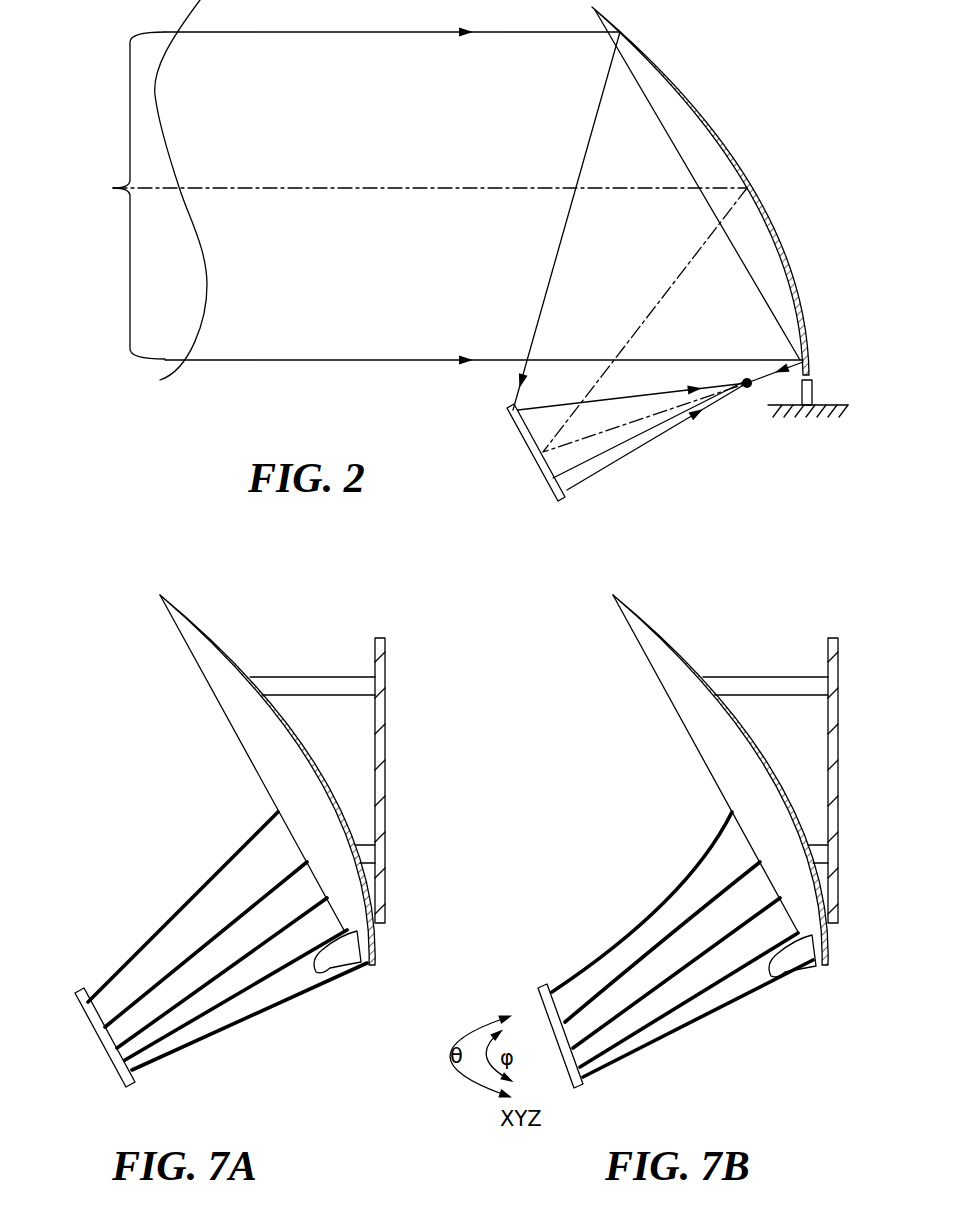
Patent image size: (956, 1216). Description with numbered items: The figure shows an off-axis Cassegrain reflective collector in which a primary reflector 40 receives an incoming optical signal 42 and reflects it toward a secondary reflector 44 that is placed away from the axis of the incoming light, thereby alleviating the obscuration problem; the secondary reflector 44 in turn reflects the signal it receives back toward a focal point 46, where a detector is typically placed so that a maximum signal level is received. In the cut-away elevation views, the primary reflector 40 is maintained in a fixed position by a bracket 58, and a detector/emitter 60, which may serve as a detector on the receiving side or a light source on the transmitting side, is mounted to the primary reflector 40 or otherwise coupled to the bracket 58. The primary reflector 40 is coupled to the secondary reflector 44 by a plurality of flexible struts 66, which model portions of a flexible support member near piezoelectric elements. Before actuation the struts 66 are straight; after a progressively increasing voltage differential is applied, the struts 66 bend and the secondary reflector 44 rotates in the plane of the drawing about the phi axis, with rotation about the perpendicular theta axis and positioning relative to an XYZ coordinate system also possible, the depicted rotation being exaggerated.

In FIG. 2, the primary reflector 40 is at (687, 97).
In FIG. 7A, the primary reflector 40 is at (205, 637).
In FIG. 7B, the primary reflector 40 is at (667, 643).
In FIG. 2, the incoming optical signal 42 is at (415, 195).
In FIG. 2, the secondary reflector 44 is at (557, 477).
In FIG. 7A, the secondary reflector 44 is at (75, 1005).
In FIG. 7B, the secondary reflector 44 is at (540, 1002).
In FIG. 2, the focal point 46 is at (752, 388).
In FIG. 7A, the bracket 58 is at (386, 750).
In FIG. 7B, the bracket 58 is at (839, 745).
In FIG. 7A, the detector/emitter 60 is at (327, 968).
In FIG. 7B, the detector/emitter 60 is at (782, 972).
In FIG. 7A, the flexible struts 66 is at (178, 908).
In FIG. 7B, the flexible struts 66 is at (663, 900).